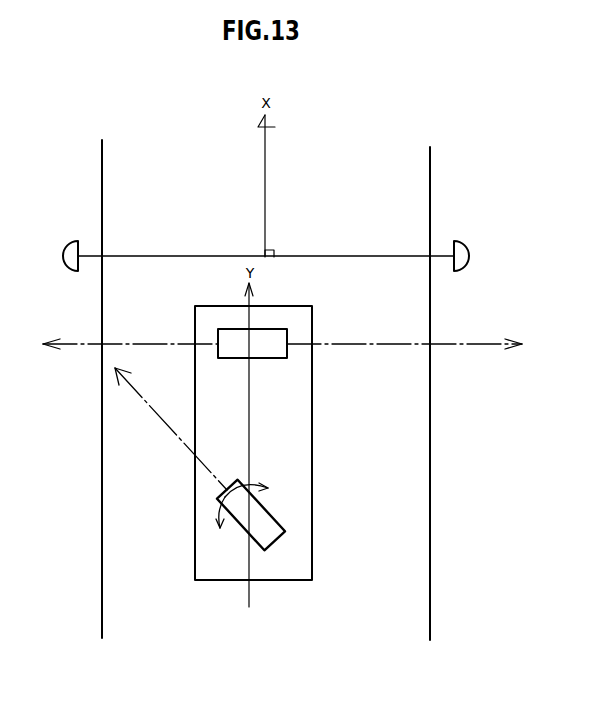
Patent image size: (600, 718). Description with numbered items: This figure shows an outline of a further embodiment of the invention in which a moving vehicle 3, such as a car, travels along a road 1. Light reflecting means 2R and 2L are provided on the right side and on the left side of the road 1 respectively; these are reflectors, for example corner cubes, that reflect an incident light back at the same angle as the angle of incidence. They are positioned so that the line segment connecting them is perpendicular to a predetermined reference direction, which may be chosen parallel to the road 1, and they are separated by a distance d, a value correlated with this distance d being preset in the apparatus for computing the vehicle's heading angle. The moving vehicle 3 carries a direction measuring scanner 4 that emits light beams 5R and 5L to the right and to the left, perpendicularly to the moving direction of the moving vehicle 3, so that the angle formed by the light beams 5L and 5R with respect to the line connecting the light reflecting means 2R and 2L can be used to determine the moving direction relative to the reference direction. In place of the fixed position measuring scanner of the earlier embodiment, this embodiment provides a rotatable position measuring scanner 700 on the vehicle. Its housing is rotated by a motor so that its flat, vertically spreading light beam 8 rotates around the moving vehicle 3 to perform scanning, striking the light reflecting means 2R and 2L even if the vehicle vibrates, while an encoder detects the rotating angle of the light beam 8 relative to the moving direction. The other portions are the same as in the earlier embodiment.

The road 1 is at (395, 142).
The light reflecting means 2L is at (63, 243).
The light reflecting means 2R is at (460, 243).
The moving vehicle 3 is at (313, 400).
The direction measuring scanner 4 is at (241, 359).
The light beam 5L is at (83, 343).
The light beam 5R is at (452, 343).
The light beam 8 is at (176, 434).
The rotatable position measuring scanner 700 is at (266, 504).
The distance d is at (307, 256).